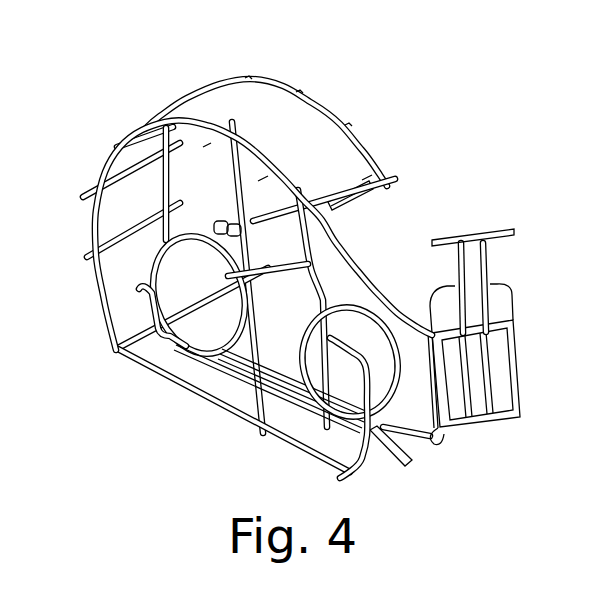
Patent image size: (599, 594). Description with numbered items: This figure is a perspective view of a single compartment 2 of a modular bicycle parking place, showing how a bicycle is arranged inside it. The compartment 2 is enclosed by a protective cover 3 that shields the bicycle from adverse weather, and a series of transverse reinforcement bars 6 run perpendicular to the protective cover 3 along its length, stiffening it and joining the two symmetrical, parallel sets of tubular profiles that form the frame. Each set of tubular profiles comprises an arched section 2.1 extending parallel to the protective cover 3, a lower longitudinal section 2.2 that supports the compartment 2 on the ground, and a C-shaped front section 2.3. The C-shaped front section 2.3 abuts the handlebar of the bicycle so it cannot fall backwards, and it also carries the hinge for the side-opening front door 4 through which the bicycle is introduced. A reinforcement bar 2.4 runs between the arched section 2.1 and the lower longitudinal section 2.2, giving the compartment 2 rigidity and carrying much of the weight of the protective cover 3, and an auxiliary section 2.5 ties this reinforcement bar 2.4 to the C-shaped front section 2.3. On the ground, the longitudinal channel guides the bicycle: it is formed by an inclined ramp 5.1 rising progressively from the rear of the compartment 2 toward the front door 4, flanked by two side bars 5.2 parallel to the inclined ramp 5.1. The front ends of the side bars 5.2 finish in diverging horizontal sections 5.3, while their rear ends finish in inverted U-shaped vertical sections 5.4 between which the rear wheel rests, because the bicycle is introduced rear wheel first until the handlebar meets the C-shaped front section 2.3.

The compartment 2 is at (412, 160).
The arched section 2.1 is at (363, 163).
The lower longitudinal section 2.2 is at (177, 375).
The C-shaped front section 2.3 is at (333, 340).
The reinforcement bar 2.4 is at (233, 222).
The auxiliary section 2.5 is at (242, 236).
The protective cover 3 is at (256, 115).
The front door 4 is at (477, 372).
The inclined ramp 5.1 is at (340, 420).
The side bars 5.2 is at (262, 362).
The diverging horizontal sections 5.3 is at (415, 440).
The inverted U-shaped vertical sections 5.4 is at (200, 297).
The transverse reinforcement bars 6 is at (130, 230).